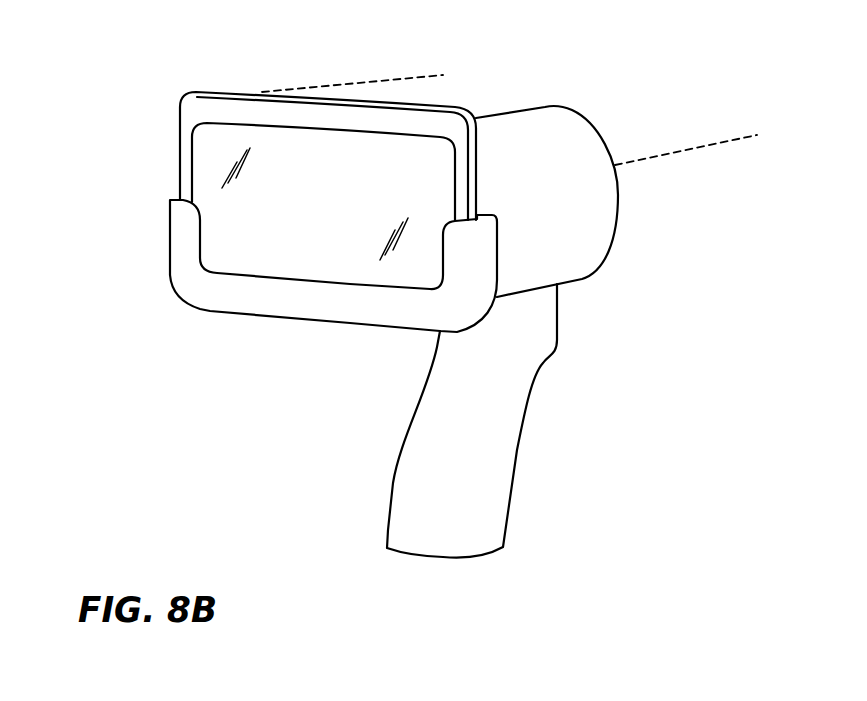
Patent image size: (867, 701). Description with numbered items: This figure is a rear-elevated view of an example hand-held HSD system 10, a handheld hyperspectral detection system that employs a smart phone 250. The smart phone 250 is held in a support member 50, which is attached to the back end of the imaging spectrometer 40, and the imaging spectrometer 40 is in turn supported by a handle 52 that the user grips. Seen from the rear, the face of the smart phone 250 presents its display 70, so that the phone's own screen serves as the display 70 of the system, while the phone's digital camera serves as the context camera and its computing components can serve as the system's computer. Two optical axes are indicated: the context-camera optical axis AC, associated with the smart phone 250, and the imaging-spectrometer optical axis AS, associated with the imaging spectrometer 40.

The hand-held HSD system 10 is at (518, 62).
The imaging spectrometer 40 is at (597, 212).
The support member 50 is at (175, 252).
The handle 52 is at (422, 418).
The display 70 is at (215, 140).
The smart phone 250 is at (162, 108).
The context-camera optical axis AC is at (405, 78).
The imaging-spectrometer optical axis AS is at (688, 148).